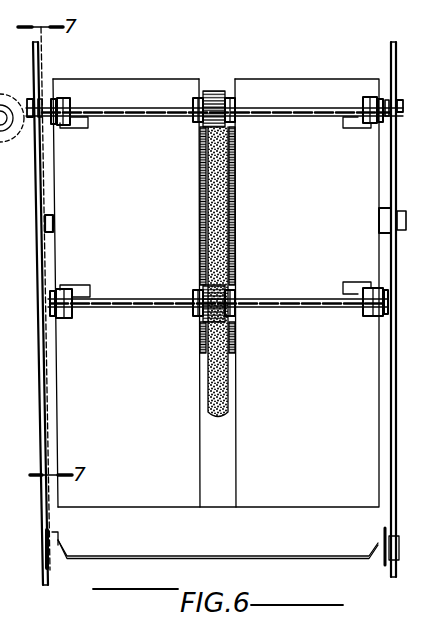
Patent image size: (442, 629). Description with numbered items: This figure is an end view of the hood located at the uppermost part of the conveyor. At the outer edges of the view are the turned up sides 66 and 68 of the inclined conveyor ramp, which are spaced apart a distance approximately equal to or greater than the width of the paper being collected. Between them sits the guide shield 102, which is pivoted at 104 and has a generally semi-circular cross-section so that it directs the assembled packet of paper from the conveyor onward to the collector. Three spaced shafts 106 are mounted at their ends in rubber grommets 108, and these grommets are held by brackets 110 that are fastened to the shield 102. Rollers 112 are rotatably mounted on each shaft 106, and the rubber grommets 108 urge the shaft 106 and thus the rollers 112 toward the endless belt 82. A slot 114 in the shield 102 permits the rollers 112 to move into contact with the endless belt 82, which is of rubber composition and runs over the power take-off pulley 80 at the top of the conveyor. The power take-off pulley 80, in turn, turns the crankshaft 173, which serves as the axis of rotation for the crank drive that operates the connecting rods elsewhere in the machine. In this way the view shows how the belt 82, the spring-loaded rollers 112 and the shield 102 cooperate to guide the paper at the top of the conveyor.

The turned up side 66 is at (44, 426).
The turned up side 68 is at (397, 425).
The power take-off pulley 80 is at (203, 339).
The endless belt 82 is at (228, 404).
The guide shield 102 is at (60, 392).
The pivot 104 is at (30, 105).
The shaft 106 is at (297, 107).
The rubber grommet 108 is at (68, 101).
The bracket 110 is at (85, 129).
The roller 112 is at (208, 89).
The slot 114 is at (203, 455).
The crankshaft 173 is at (52, 215).